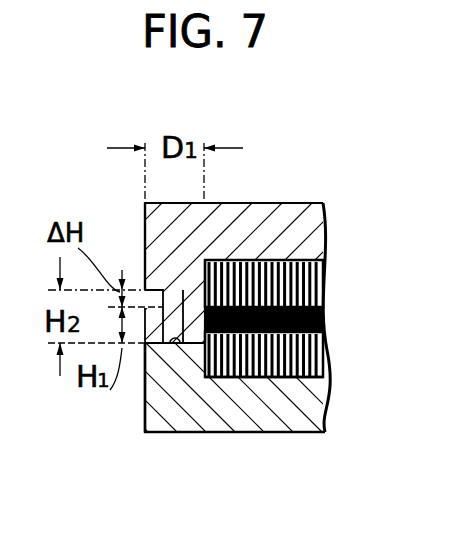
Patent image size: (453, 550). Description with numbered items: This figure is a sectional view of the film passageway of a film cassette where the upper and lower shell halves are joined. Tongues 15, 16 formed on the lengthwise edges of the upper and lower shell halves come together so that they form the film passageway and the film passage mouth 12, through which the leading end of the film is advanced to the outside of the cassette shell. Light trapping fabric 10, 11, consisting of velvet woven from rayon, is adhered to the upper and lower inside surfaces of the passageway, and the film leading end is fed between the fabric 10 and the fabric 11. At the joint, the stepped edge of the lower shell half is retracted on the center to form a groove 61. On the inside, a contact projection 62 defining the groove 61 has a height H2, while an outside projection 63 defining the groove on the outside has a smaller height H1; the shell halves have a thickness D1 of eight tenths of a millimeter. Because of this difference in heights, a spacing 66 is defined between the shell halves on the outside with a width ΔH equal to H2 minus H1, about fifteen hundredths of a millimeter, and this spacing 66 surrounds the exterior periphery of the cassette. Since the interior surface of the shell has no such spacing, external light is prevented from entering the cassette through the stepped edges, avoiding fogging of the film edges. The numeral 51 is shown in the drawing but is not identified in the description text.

The light trapping fabric 10 is at (332, 283).
The light trapping fabric 11 is at (334, 353).
The film passage mouth 12 is at (227, 377).
The tongue 15 is at (292, 203).
The tongue 16 is at (289, 434).
The lower block side face 51 is at (143, 388).
The groove 61 is at (174, 344).
The contact projection 62 is at (200, 266).
The outside projection 63 is at (147, 334).
The spacing 66 is at (144, 275).